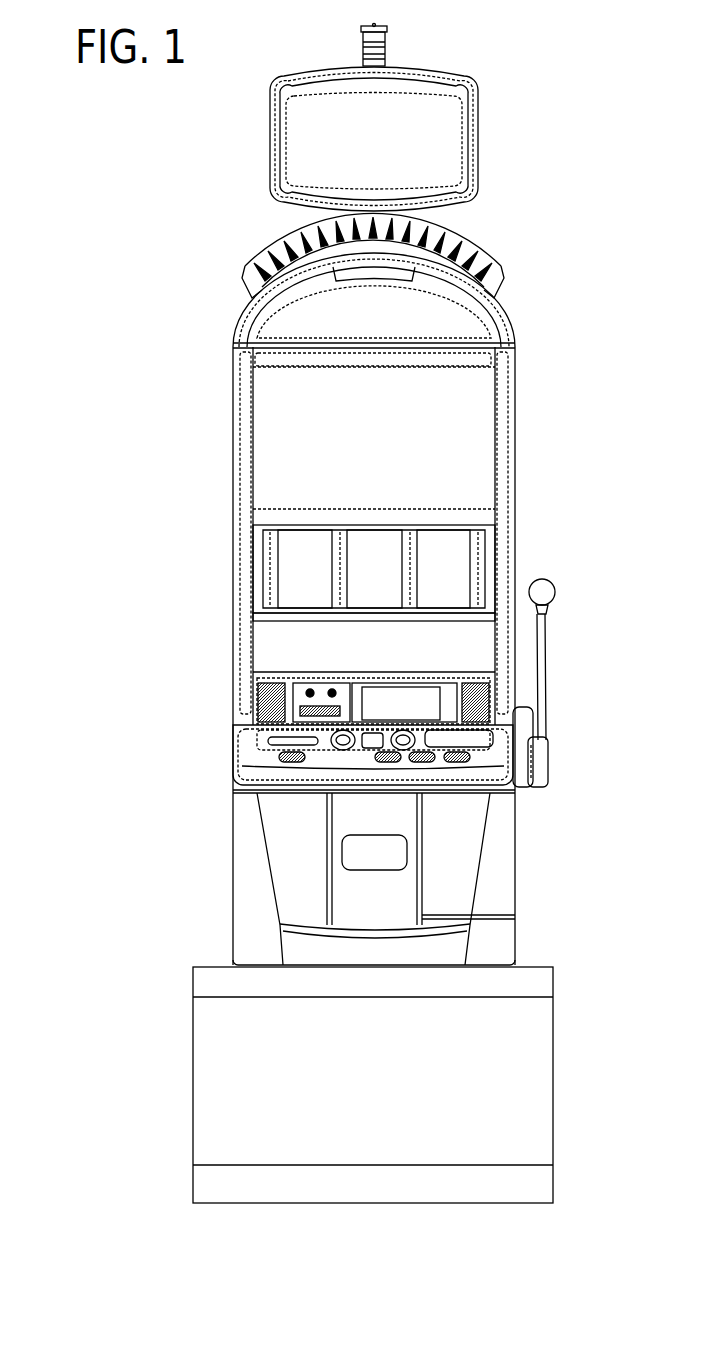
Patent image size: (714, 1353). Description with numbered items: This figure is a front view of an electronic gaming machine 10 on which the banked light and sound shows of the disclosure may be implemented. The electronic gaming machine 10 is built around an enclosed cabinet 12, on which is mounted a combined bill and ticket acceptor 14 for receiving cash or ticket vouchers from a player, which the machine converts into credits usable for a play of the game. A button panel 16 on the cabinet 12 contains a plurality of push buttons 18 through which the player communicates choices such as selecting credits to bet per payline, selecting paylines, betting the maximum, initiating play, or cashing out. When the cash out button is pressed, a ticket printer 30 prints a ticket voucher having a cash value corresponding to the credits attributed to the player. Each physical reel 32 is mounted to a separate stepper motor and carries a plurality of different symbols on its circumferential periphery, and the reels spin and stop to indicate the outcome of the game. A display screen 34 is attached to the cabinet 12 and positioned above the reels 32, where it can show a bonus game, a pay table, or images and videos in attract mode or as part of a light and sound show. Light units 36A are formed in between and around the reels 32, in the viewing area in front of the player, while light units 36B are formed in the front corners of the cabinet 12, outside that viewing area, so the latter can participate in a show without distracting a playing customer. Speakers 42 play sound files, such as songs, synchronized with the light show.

The electronic gaming machine 10 is at (92, 541).
The enclosed cabinet 12 is at (233, 852).
The bill and ticket acceptor 14 is at (473, 742).
The button panel 16 is at (255, 763).
The push buttons 18 is at (388, 763).
The ticket printer 30 is at (287, 738).
The physical reel 32 is at (374, 573).
The display screen 34 is at (447, 417).
The light units 36A is at (342, 540).
The light units 36B is at (238, 351).
The speakers 42 is at (270, 695).